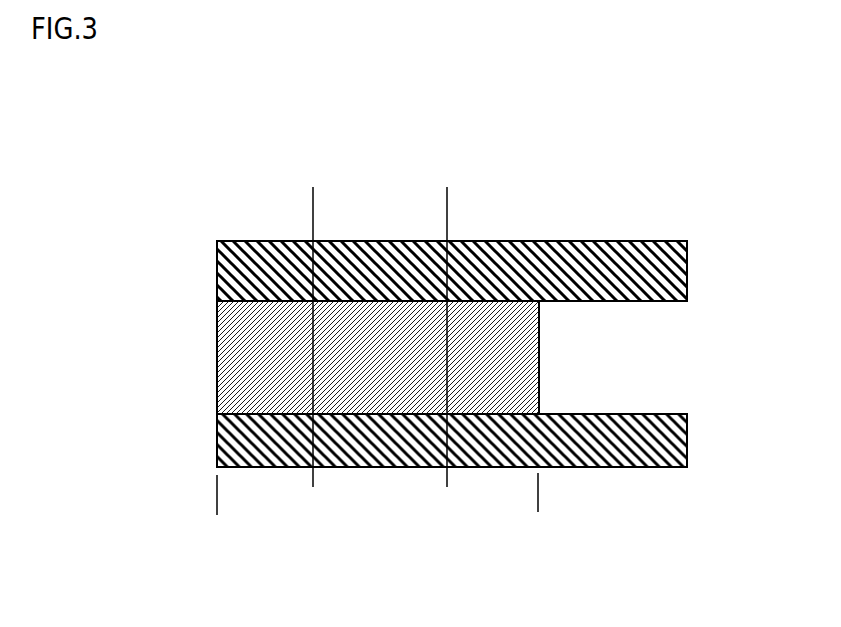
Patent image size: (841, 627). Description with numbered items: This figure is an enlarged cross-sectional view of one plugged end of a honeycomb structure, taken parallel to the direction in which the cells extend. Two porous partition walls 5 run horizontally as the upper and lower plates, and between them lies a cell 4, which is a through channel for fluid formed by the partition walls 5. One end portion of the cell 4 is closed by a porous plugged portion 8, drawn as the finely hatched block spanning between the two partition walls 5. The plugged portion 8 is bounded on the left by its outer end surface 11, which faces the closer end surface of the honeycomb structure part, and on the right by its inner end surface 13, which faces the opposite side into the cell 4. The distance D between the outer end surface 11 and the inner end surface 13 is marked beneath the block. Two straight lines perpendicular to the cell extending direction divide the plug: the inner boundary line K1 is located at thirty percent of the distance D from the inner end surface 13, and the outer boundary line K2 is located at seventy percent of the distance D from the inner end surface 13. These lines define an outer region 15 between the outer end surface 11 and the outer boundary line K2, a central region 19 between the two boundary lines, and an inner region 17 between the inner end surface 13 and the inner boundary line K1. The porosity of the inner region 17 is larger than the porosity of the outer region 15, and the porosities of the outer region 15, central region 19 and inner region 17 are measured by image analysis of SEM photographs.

The cell 4 is at (481, 352).
The partition wall 5 is at (623, 241).
The plugged portion 8 is at (369, 288).
The outer end surface 11 is at (217, 357).
The inner end surface 13 is at (539, 344).
The outer region 15 is at (313, 218).
The inner region 17 is at (538, 223).
The central region 19 is at (447, 218).
The inner boundary line K1 is at (447, 187).
The outer boundary line K2 is at (313, 187).
The distance between outer end surface and inner end surface D is at (218, 500).